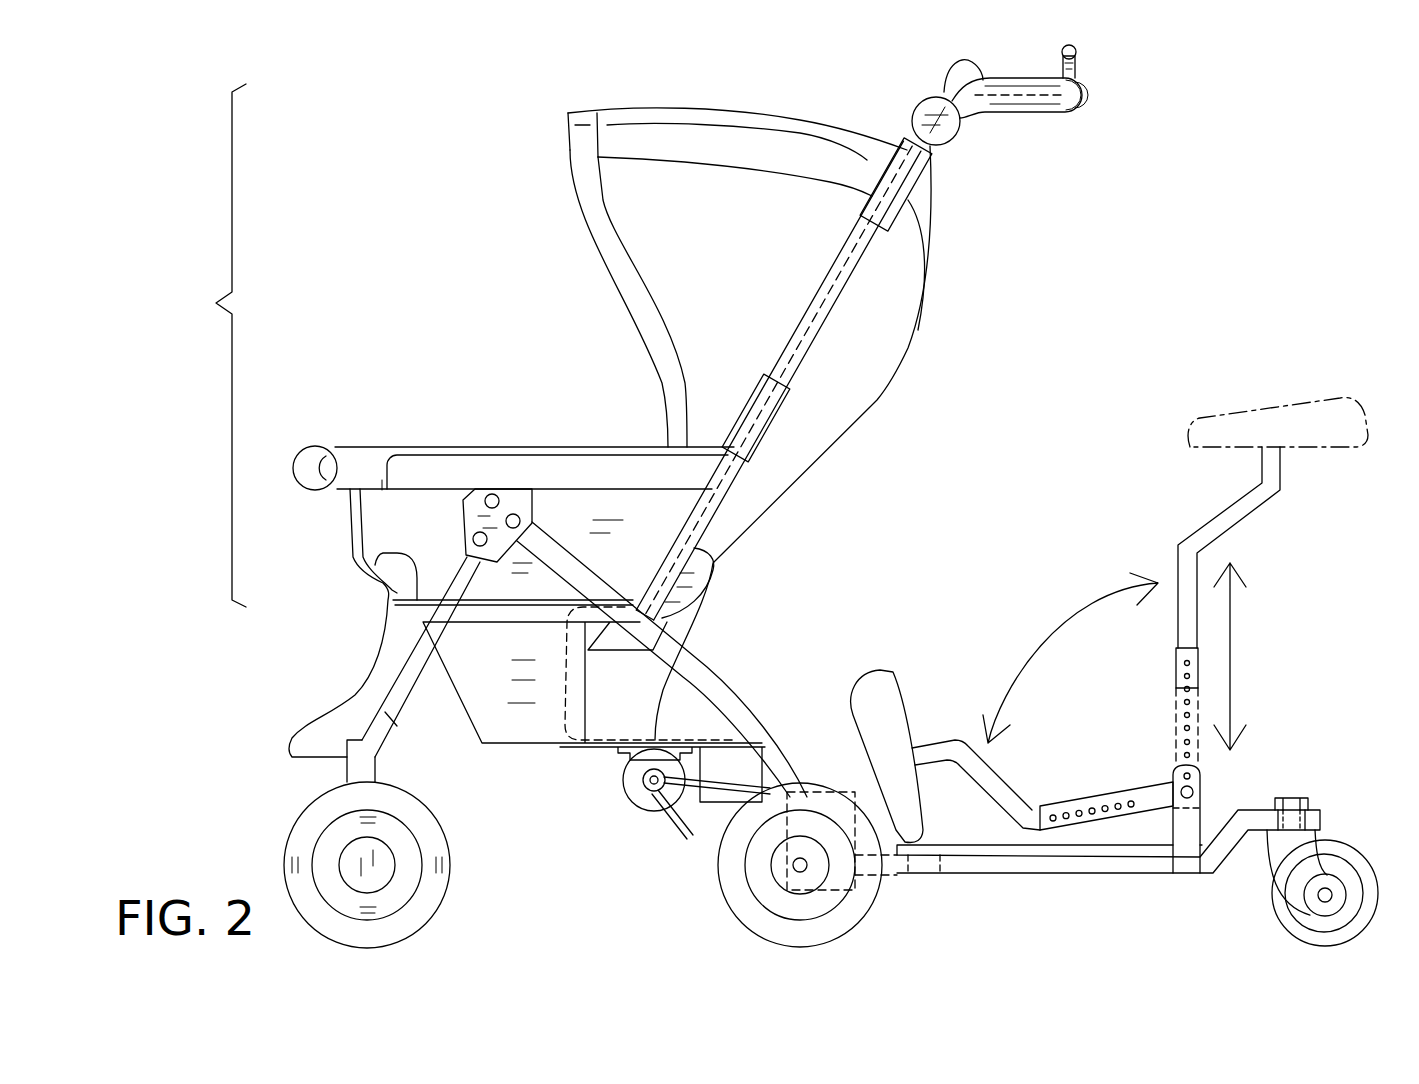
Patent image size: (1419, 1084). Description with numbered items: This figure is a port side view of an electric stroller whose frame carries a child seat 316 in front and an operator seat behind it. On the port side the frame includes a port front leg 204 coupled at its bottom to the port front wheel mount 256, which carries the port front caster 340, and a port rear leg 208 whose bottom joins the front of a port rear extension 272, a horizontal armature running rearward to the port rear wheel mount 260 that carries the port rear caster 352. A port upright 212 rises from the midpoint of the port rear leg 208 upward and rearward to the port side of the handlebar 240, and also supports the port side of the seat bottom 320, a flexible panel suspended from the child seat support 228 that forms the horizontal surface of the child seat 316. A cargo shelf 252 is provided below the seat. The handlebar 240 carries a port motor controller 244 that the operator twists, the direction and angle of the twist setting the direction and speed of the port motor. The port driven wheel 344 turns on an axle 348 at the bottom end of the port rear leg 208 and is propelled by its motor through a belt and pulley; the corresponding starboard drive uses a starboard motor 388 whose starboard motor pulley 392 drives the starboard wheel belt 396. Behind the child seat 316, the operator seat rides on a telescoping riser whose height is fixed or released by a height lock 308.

The port front leg 204 is at (420, 673).
The port rear leg 208 is at (727, 673).
The port upright 212 is at (822, 293).
The child seat support 228 is at (320, 443).
The handlebar 240 is at (1048, 113).
The port motor controller 244 is at (1077, 69).
The cargo shelf 252 is at (697, 640).
The port front wheel mount 256 is at (362, 768).
The port rear wheel mount 260 is at (1323, 815).
The port rear extension 272 is at (1055, 874).
The height lock 308 is at (1113, 800).
The child seat 316 is at (198, 345).
The seat bottom 320 is at (384, 554).
The port front caster 340 is at (415, 915).
The port driven wheel 344 is at (840, 922).
The rear axle 348 is at (793, 867).
The port rear caster 352 is at (1288, 927).
The starboard motor 388 is at (624, 777).
The starboard motor pulley 392 is at (646, 792).
The starboard wheel belt 396 is at (687, 832).